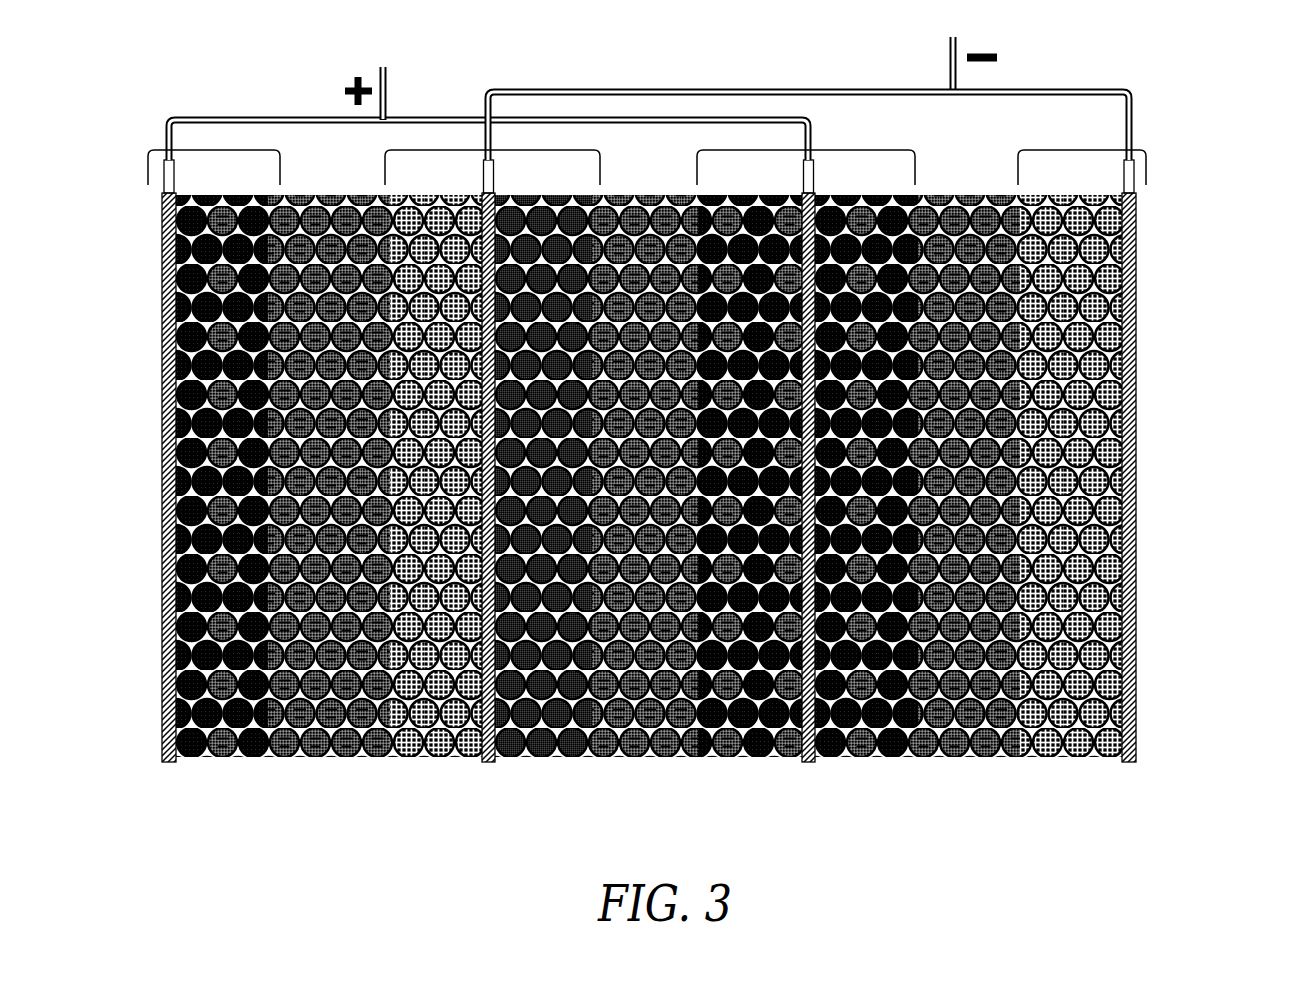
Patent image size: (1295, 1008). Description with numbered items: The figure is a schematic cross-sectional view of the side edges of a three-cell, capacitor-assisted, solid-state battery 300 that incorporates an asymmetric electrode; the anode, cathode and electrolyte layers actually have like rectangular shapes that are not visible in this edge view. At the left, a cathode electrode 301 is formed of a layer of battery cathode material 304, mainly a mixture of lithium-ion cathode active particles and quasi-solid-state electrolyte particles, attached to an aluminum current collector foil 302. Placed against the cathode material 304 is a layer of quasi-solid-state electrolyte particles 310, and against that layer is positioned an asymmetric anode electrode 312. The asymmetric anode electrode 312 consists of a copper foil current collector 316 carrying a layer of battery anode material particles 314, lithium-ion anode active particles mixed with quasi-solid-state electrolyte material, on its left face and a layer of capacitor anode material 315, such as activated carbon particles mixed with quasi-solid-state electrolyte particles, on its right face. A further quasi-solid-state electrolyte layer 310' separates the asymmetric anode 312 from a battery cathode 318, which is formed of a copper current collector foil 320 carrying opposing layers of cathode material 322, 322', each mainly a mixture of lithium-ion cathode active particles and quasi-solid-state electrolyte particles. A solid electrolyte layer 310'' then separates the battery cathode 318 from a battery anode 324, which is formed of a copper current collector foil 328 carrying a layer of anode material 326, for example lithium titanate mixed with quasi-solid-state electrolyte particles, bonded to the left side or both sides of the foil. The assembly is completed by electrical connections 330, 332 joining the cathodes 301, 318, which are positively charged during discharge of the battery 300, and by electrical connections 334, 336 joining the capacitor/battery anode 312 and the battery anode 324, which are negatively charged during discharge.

The capacitor-assisted solid-state battery 300 is at (670, 434).
The cathode electrode 301 is at (202, 138).
The aluminum current collector foil 302 is at (160, 698).
The battery cathode material 304 is at (230, 786).
The quasi-solid-state electrolyte layer 310 is at (329, 523).
The quasi-solid-state electrolyte layer 310' is at (645, 522).
The solid electrolyte layer 310'' is at (969, 523).
The asymmetric anode electrode 312 is at (461, 138).
The battery anode material particles 314 is at (424, 768).
The capacitor anode material 315 is at (547, 768).
The copper foil current collector 316 is at (484, 762).
The battery cathode 318 is at (846, 138).
The copper current collector foil 320 is at (810, 762).
The cathode material layer 322 is at (750, 529).
The cathode material layer 322' is at (866, 522).
The battery anode 324 is at (1085, 138).
The anode material layer 326 is at (1065, 768).
The copper current collector foil 328 is at (1138, 700).
The electrical connection 330 is at (297, 116).
The electrical connection 332 is at (600, 116).
The electrical connection 334 is at (765, 88).
The electrical connection 336 is at (1060, 88).